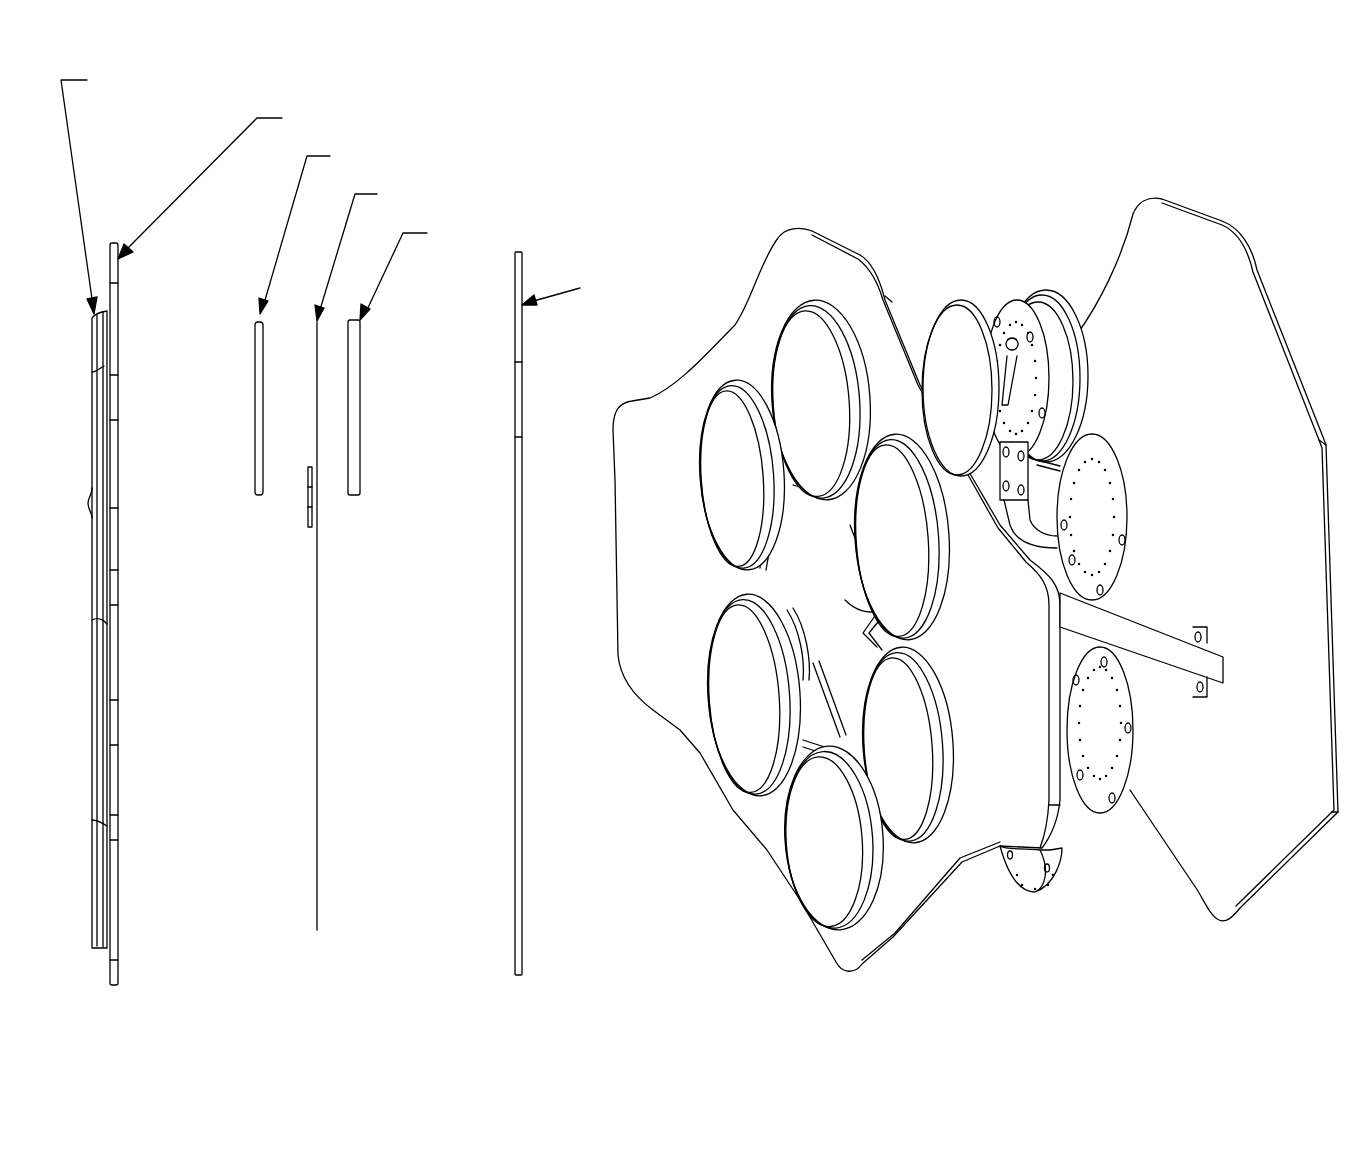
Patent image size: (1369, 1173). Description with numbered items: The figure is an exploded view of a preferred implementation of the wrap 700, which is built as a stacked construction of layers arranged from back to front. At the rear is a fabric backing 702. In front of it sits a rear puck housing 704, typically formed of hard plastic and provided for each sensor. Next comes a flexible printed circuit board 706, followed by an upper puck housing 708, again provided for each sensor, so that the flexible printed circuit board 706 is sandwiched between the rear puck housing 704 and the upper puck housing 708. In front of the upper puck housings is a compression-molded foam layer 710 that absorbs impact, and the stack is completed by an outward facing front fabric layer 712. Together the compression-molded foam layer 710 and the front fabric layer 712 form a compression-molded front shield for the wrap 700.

The wrap 700 is at (1143, 131).
The fabric backing 702 is at (1208, 293).
The rear puck housing 704 is at (1037, 287).
The flexible printed circuit board 706 is at (1008, 300).
The upper puck housing 708 is at (957, 303).
The compression-molded foam layer 710 is at (820, 235).
The outward facing front fabric layer 712 is at (790, 363).